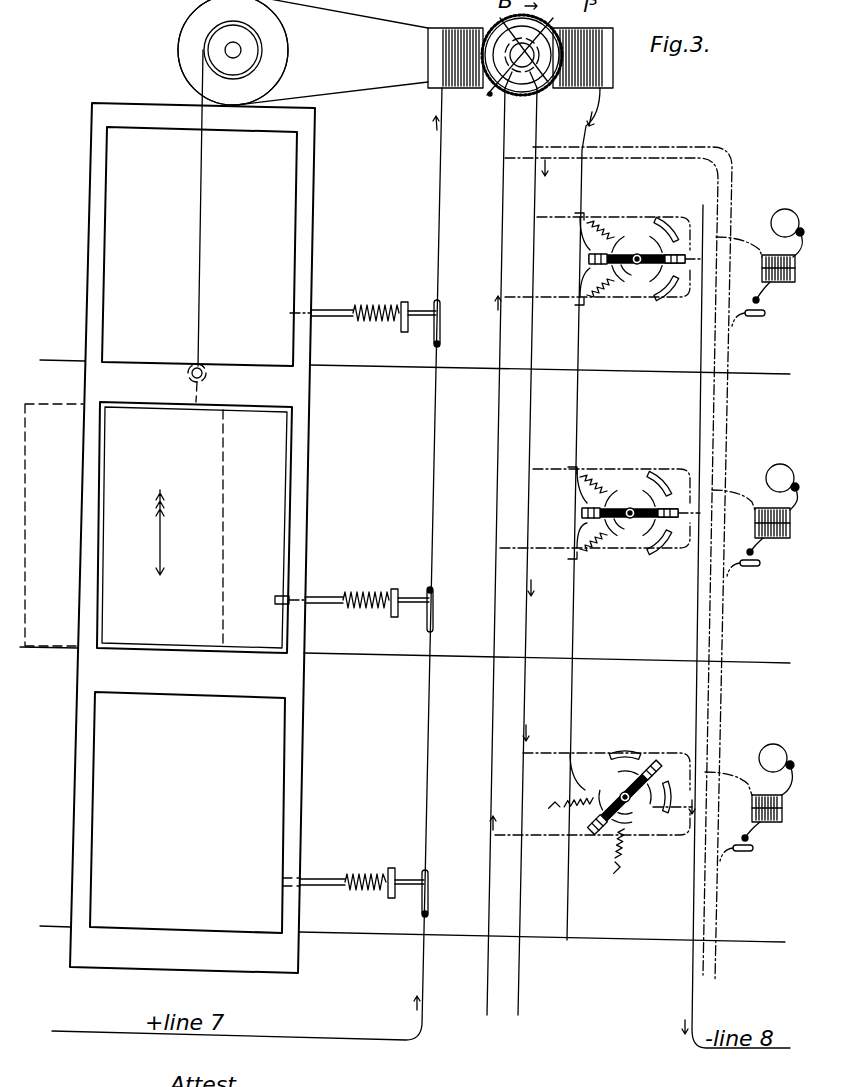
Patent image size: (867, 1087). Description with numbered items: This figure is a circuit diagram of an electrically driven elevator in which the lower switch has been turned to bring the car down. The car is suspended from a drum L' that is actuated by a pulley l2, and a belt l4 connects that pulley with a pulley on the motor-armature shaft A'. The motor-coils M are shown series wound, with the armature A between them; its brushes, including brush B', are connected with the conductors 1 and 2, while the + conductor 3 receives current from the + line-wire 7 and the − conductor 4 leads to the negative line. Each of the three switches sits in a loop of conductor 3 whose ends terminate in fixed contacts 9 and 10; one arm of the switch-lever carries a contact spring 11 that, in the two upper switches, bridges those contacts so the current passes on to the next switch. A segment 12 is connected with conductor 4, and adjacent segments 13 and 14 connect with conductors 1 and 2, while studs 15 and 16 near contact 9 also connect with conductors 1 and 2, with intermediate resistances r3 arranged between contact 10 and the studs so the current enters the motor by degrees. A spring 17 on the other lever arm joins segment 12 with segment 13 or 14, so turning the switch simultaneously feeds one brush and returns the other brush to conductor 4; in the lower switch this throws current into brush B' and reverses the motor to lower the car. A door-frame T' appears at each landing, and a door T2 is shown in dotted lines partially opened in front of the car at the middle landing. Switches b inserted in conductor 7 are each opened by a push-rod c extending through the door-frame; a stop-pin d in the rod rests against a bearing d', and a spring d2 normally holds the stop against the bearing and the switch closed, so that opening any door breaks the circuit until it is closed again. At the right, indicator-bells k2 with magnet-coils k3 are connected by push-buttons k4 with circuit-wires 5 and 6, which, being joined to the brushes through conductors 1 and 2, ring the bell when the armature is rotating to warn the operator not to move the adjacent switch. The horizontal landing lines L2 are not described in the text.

The drum L' is at (233, 201).
The pulley l2 is at (288, 52).
The belt l4 is at (332, 52).
The motor-coil M is at (520, 54).
The armature A is at (526, 69).
The armature-shaft A' is at (521, 78).
The commutator brush B' is at (515, 64).
The + line-wire 7 is at (247, 564).
The conductor 1 is at (502, 188).
The conductor 2 is at (537, 188).
The + conductor 3 is at (582, 188).
The − conductor 4 is at (703, 205).
The circuit-wire 5 is at (738, 392).
The circuit-wire 6 is at (702, 402).
The door-frame T' is at (170, 538).
The door T2 is at (222, 535).
The level line L2 is at (385, 382).
The push-rod c is at (323, 308).
The spring d2 is at (369, 303).
The stop-pin d is at (415, 579).
The bearing d' is at (390, 613).
The switch b is at (441, 330).
The fixed contact 9 is at (617, 780).
The fixed contact 10 is at (590, 258).
The contact plate or spring 11 is at (610, 845).
The segment 12 is at (630, 537).
The segment 13 is at (674, 561).
The segment 14 is at (674, 239).
The stud 15 is at (608, 536).
The stud 16 is at (612, 227).
The spring 17 is at (673, 508).
The intermediate resistance r3 is at (594, 221).
The indicator-bell k2 is at (781, 477).
The magnet-coil k3 is at (796, 285).
The switch or push-button k4 is at (765, 316).